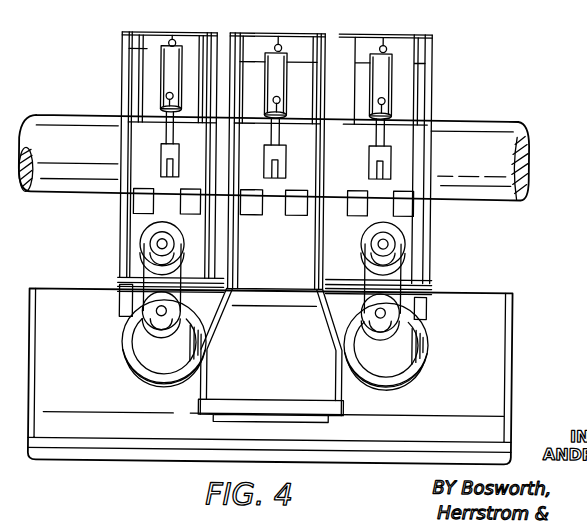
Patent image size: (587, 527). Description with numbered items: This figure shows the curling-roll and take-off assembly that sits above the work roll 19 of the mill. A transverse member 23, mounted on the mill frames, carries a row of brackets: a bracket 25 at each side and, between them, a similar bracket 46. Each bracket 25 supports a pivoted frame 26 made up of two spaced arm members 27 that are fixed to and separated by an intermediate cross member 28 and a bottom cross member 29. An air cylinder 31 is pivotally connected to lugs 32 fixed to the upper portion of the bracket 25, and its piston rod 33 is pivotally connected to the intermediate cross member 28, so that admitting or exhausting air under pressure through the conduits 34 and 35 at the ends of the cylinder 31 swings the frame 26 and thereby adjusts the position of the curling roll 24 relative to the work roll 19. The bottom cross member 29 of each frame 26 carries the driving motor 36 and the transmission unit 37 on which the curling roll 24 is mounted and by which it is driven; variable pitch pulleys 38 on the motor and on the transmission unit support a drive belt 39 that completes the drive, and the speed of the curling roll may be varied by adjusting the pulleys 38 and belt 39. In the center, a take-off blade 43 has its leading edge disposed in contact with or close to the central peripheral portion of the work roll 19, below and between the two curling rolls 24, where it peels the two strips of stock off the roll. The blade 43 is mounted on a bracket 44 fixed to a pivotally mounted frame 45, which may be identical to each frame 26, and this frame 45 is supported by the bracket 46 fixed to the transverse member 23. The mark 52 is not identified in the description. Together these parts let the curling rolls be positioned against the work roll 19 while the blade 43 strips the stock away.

The work roll 19 is at (480, 300).
The transverse member 23 is at (523, 127).
The curling roll 24 is at (150, 370).
The bracket 25 is at (146, 52).
The pivoted frame 26 is at (117, 207).
The arm member 27 is at (122, 35).
The intermediate cross member 28 is at (135, 149).
The bottom cross member 29 is at (128, 280).
The air cylinder 31 is at (160, 73).
The lug 32 is at (147, 44).
The piston rod 33 is at (173, 133).
The conduit 34 is at (170, 41).
The conduit 35 is at (163, 98).
The driving motor 36 is at (152, 243).
The transmission unit 37 is at (137, 355).
The variable pitch pulley 38 is at (178, 242).
The drive belt 39 is at (147, 298).
The take-off blade 43 is at (245, 405).
The bracket 44 is at (320, 325).
The pivotally mounted frame 45 is at (308, 258).
The bracket 46 is at (297, 46).
The sheet mark 52 is at (504, 10).